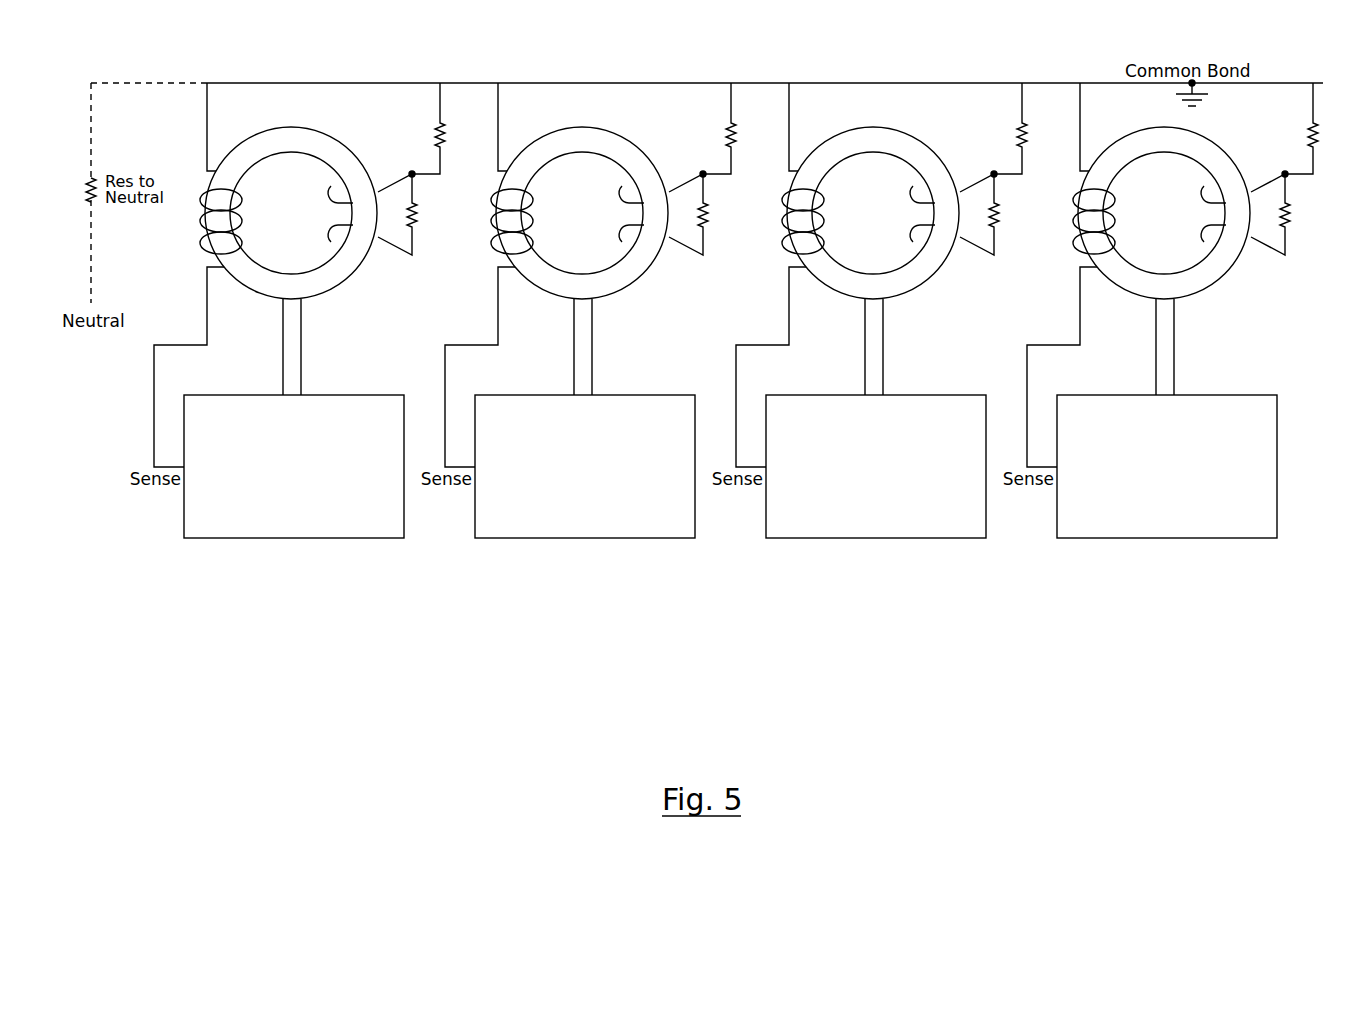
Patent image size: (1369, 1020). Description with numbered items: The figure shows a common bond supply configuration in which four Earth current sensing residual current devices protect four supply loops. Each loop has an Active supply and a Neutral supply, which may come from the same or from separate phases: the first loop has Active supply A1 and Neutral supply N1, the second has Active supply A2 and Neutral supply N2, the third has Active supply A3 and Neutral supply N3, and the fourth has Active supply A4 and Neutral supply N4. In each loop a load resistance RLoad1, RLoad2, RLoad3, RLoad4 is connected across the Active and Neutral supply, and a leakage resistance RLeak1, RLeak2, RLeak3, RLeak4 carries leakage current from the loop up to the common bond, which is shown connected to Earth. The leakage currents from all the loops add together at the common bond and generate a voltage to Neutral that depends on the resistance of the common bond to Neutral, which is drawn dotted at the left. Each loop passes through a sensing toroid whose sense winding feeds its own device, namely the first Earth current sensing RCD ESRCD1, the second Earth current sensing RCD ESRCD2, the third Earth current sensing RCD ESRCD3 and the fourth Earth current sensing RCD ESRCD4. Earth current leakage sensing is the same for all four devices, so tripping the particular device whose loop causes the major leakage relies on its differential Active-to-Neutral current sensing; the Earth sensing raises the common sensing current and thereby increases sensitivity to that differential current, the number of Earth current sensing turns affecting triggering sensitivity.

The Active supply of the first loop A1 is at (331, 186).
The Neutral supply of the first loop N1 is at (331, 242).
The Active supply of the second loop A2 is at (622, 186).
The Neutral supply of the second loop N2 is at (622, 242).
The Active supply of the third loop A3 is at (913, 186).
The Neutral supply of the third loop N3 is at (913, 242).
The Active supply of the fourth loop A4 is at (1204, 186).
The Neutral supply of the fourth loop N4 is at (1204, 242).
The leakage resistance of the first loop RLeak1 is at (448, 130).
The leakage resistance of the second loop RLeak2 is at (739, 130).
The leakage resistance of the third loop RLeak3 is at (1030, 130).
The leakage resistance of the fourth loop RLeak4 is at (1321, 130).
The load resistance of the first loop RLoad1 is at (426, 214).
The load resistance of the second loop RLoad2 is at (717, 214).
The load resistance of the third loop RLoad3 is at (1008, 214).
The load resistance of the fourth loop RLoad4 is at (1299, 214).
The first Earth current sensing RCD ESRCD1 is at (294, 418).
The second Earth current sensing RCD ESRCD2 is at (585, 418).
The third Earth current sensing RCD ESRCD3 is at (876, 418).
The fourth Earth current sensing RCD ESRCD4 is at (1167, 418).